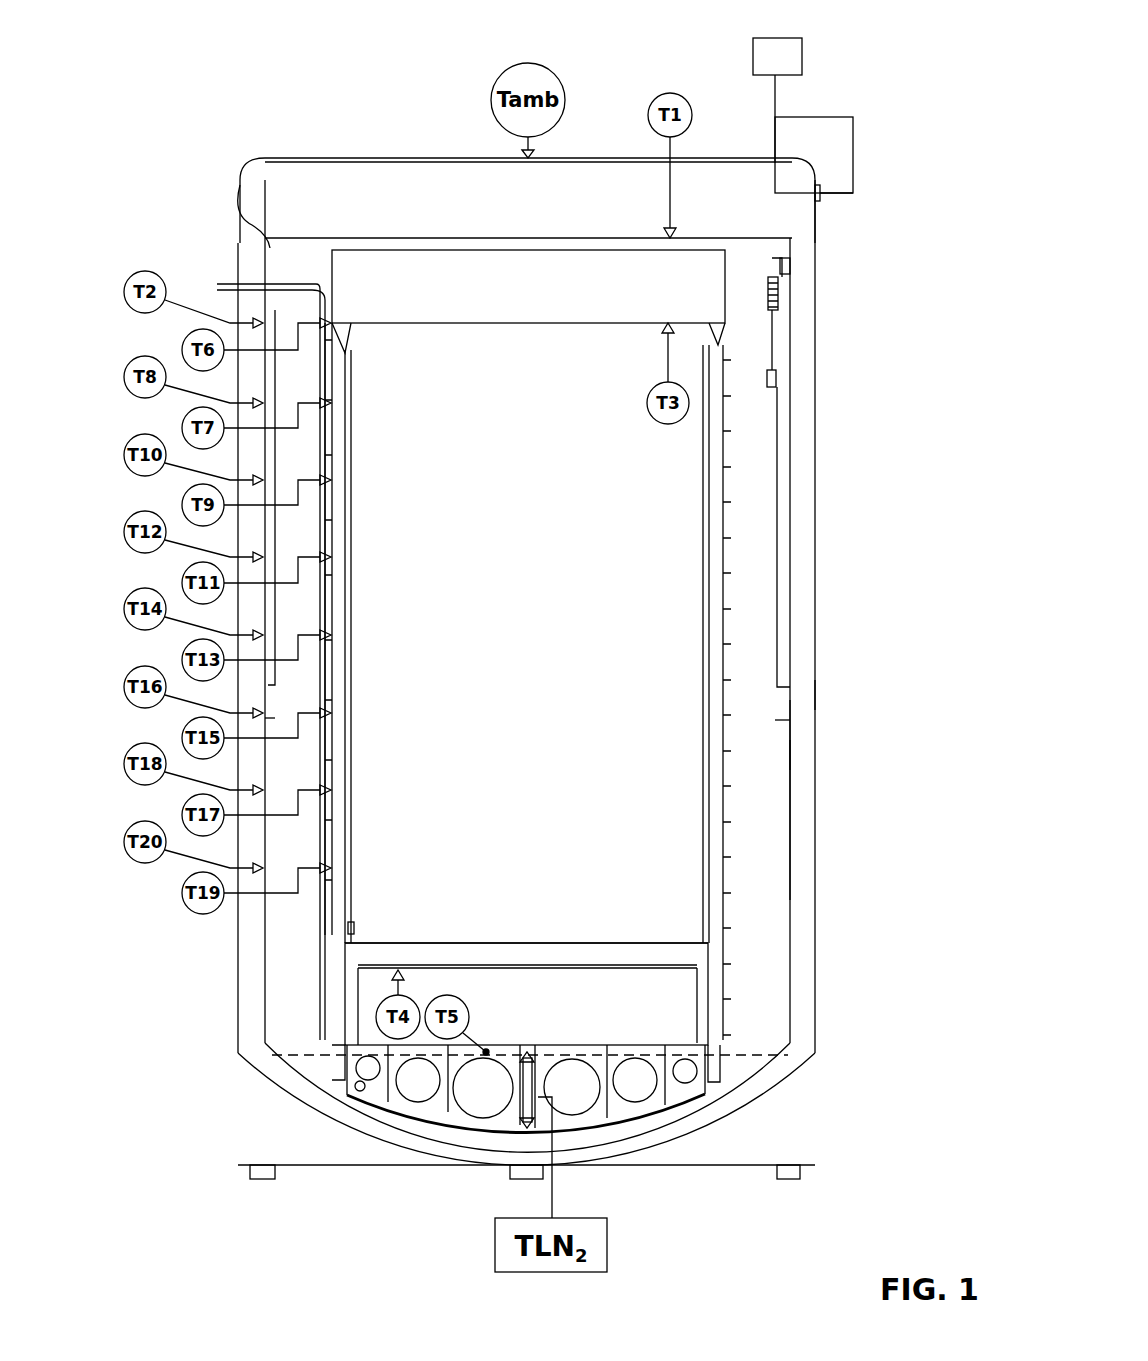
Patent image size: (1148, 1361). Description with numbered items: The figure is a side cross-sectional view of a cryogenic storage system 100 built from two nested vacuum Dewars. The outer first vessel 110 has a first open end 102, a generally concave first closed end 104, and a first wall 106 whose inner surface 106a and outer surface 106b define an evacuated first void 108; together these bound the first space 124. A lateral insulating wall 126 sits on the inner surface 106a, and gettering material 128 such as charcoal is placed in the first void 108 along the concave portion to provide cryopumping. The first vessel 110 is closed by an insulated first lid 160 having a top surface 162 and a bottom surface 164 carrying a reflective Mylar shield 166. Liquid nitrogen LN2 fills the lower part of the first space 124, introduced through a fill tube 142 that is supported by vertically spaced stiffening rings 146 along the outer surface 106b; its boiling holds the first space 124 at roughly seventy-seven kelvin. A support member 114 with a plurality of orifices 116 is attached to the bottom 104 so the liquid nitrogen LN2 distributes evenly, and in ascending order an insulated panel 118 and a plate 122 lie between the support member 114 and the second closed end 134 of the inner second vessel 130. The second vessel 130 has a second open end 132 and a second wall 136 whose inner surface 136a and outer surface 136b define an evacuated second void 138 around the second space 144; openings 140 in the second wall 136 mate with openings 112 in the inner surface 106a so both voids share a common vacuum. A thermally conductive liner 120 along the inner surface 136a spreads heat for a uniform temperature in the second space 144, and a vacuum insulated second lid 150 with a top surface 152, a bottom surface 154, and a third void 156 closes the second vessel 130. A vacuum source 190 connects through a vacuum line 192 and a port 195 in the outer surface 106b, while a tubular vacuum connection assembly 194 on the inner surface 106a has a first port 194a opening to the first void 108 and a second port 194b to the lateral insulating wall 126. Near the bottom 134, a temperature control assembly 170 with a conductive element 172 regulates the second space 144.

The cryogenic storage system 100 is at (192, 1022).
The first open end 102 is at (303, 255).
The first closed end 104 is at (683, 1130).
The first wall 106 is at (795, 784).
The inner surface 106a is at (792, 757).
The outer surface 106b is at (816, 697).
The first void 108 is at (797, 657).
The first vessel 110 is at (820, 566).
The opening 112 is at (717, 1093).
The support member 114 is at (390, 1100).
The orifices 116 is at (487, 1107).
The insulated panel 118 is at (582, 1014).
The thermally conductive liner 120 is at (353, 620).
The plate 122 is at (410, 957).
The first space 124 is at (752, 468).
The lateral insulating wall 126 is at (788, 403).
The gettering material 128 is at (617, 1097).
The second vessel 130 is at (740, 342).
The second open end 132 is at (643, 330).
The second closed end 134 is at (652, 943).
The second wall 136 is at (708, 545).
The inner surface 136a is at (718, 562).
The outer surface 136b is at (728, 500).
The second void 138 is at (706, 630).
The openings 140 is at (713, 1075).
The fill tube 142 is at (222, 285).
The second space 144 is at (660, 848).
The stiffening rings 146 is at (328, 923).
The second lid 150 is at (543, 299).
The top surface 152 is at (393, 250).
The bottom surface 154 is at (570, 320).
The third void 156 is at (437, 292).
The first lid 160 is at (555, 215).
The top surface 162 is at (295, 160).
The bottom surface 164 is at (340, 237).
The reflective Mylar shield 166 is at (240, 184).
The temperature control assembly 170 is at (350, 928).
The conductive element 172 is at (358, 958).
The vacuum source 190 is at (802, 55).
The vacuum line 192 is at (853, 140).
The vacuum connection assembly 194 is at (780, 292).
The first port 194a is at (790, 268).
The second port 194b is at (783, 377).
The port 195 is at (822, 207).
The liquid nitrogen LN2 is at (735, 1058).